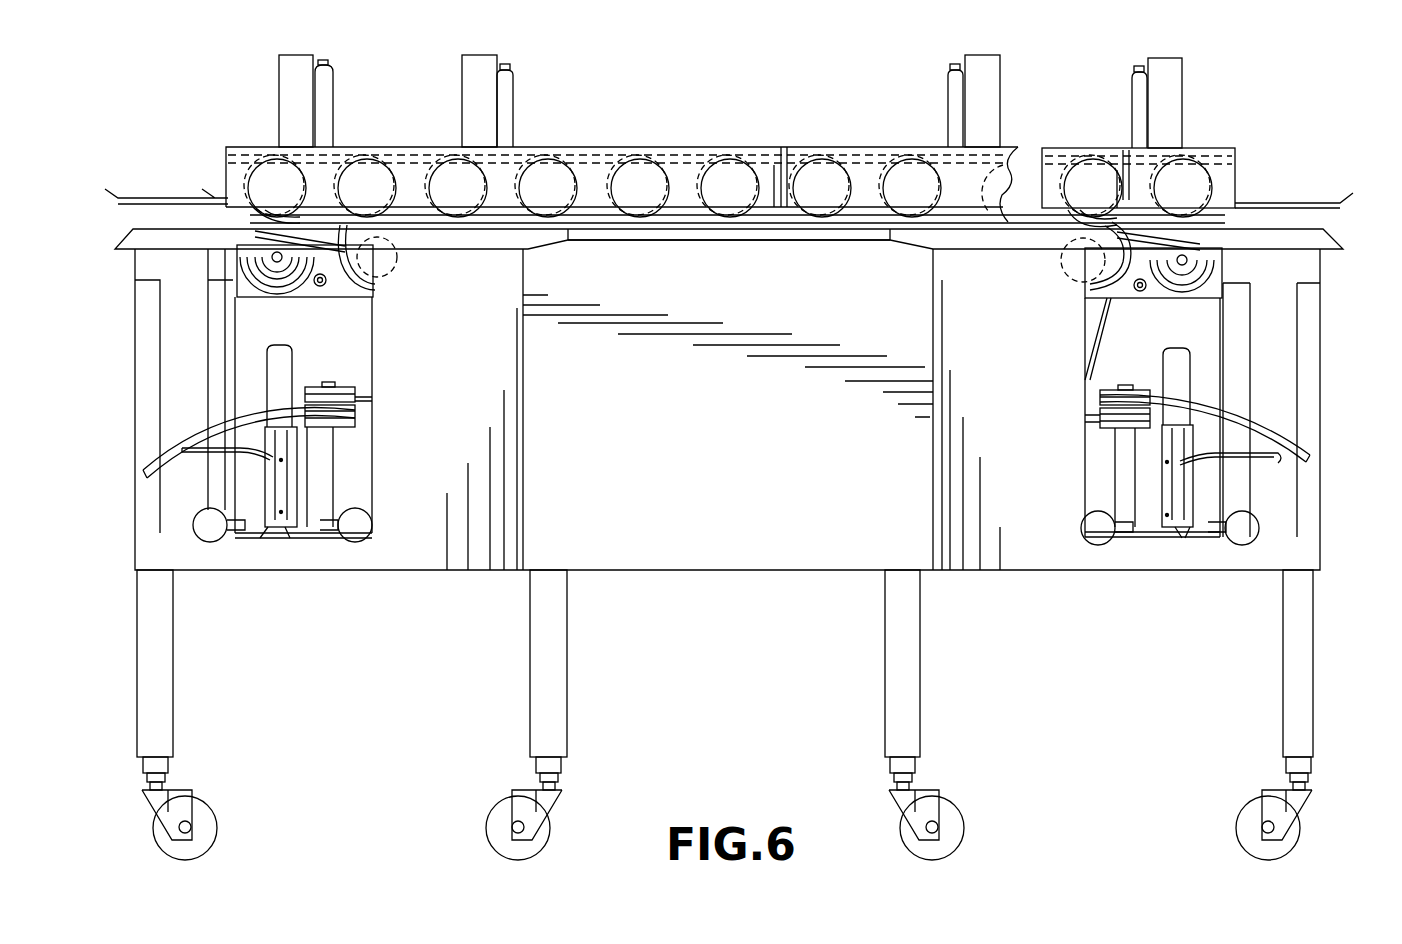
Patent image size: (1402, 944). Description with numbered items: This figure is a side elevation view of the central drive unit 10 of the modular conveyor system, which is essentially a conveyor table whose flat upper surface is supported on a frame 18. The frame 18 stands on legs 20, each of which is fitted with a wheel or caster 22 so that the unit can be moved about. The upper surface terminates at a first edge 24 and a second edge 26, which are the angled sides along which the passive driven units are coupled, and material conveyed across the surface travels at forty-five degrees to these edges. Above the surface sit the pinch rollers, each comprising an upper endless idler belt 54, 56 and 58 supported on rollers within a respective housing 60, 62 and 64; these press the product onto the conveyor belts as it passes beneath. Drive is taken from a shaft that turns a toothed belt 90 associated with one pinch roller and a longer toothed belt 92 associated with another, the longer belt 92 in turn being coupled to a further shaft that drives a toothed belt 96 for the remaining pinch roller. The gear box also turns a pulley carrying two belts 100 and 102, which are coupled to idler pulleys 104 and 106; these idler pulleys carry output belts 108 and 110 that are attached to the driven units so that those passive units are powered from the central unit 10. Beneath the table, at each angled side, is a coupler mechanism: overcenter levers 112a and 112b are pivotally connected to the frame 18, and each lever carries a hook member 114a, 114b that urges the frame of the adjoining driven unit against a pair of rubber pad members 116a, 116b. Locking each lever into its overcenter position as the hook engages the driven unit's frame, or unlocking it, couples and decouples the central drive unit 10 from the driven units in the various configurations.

The central drive unit 10 is at (745, 408).
The frame 18 is at (1312, 560).
The legs 20 is at (173, 702).
The casters 22 is at (218, 832).
The first edge 24 is at (1200, 221).
The second edge 26 is at (250, 221).
The upper endless idler belt 54 is at (688, 150).
The upper endless idler belt 56 is at (1190, 175).
The upper endless idler belt 58 is at (275, 180).
The housing 60 is at (852, 147).
The housing 62 is at (1238, 168).
The housing 64 is at (226, 153).
The toothed belt 90 is at (1282, 215).
The longer toothed belt 92 is at (845, 240).
The toothed belt 96 is at (185, 200).
The belt 100 is at (1100, 407).
The belt 102 is at (363, 390).
The idler pulley 104 is at (1117, 425).
The idler pulley 106 is at (327, 413).
The output belt 108 is at (1272, 430).
The output belt 110 is at (185, 440).
The overcenter lever 112a is at (1163, 370).
The overcenter lever 112b is at (293, 368).
The hook member 114a is at (1253, 466).
The hook member 114b is at (197, 457).
The rubber pad members 116a is at (1233, 597).
The rubber pad members 116b is at (360, 597).